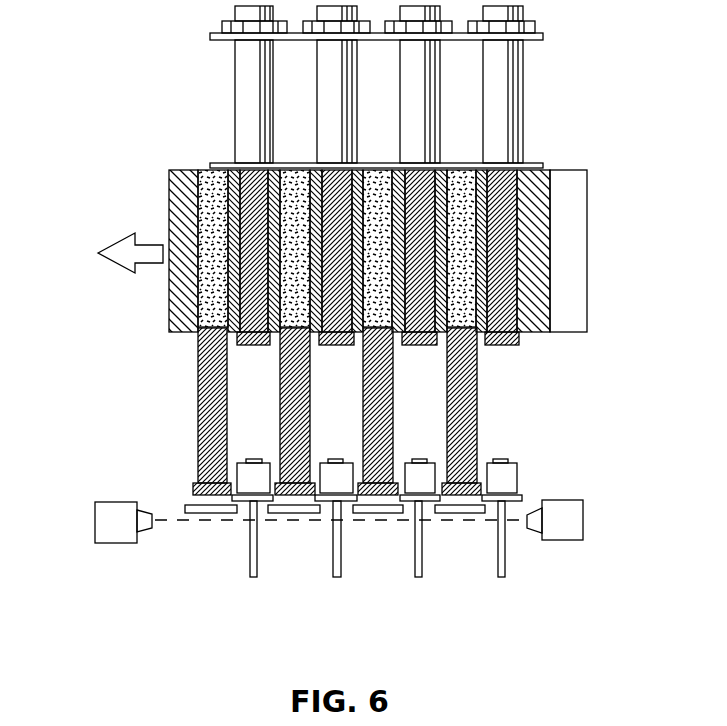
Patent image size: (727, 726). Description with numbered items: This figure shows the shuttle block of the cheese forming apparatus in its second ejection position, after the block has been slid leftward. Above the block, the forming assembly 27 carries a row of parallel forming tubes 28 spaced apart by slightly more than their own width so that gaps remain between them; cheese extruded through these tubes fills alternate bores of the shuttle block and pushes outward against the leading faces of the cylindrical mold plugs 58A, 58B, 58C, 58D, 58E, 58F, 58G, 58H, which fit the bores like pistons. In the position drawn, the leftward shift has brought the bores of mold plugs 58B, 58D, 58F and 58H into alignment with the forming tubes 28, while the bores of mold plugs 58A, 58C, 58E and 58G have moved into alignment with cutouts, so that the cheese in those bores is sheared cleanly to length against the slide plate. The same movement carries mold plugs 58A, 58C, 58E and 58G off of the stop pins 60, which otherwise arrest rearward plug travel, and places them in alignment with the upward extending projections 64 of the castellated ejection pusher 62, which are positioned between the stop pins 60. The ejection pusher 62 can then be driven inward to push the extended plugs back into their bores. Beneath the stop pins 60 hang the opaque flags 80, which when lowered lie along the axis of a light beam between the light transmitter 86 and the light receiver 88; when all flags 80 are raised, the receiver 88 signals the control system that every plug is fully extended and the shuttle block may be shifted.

The forming assembly 27 is at (586, 125).
The forming tubes 28 is at (498, 98).
The mold plug 58A is at (197, 410).
The mold plug 58B is at (205, 176).
The mold plug 58C is at (280, 408).
The mold plug 58D is at (307, 178).
The mold plug 58E is at (388, 403).
The mold plug 58F is at (447, 178).
The mold plug 58G is at (475, 408).
The mold plug 58H is at (508, 228).
The stop pins 60 is at (503, 443).
The castellated ejection pusher 62 is at (560, 485).
The projections 64 is at (293, 508).
The opaque flags 80 is at (258, 577).
The light transmitter 86 is at (563, 525).
The light receiver 88 is at (117, 532).